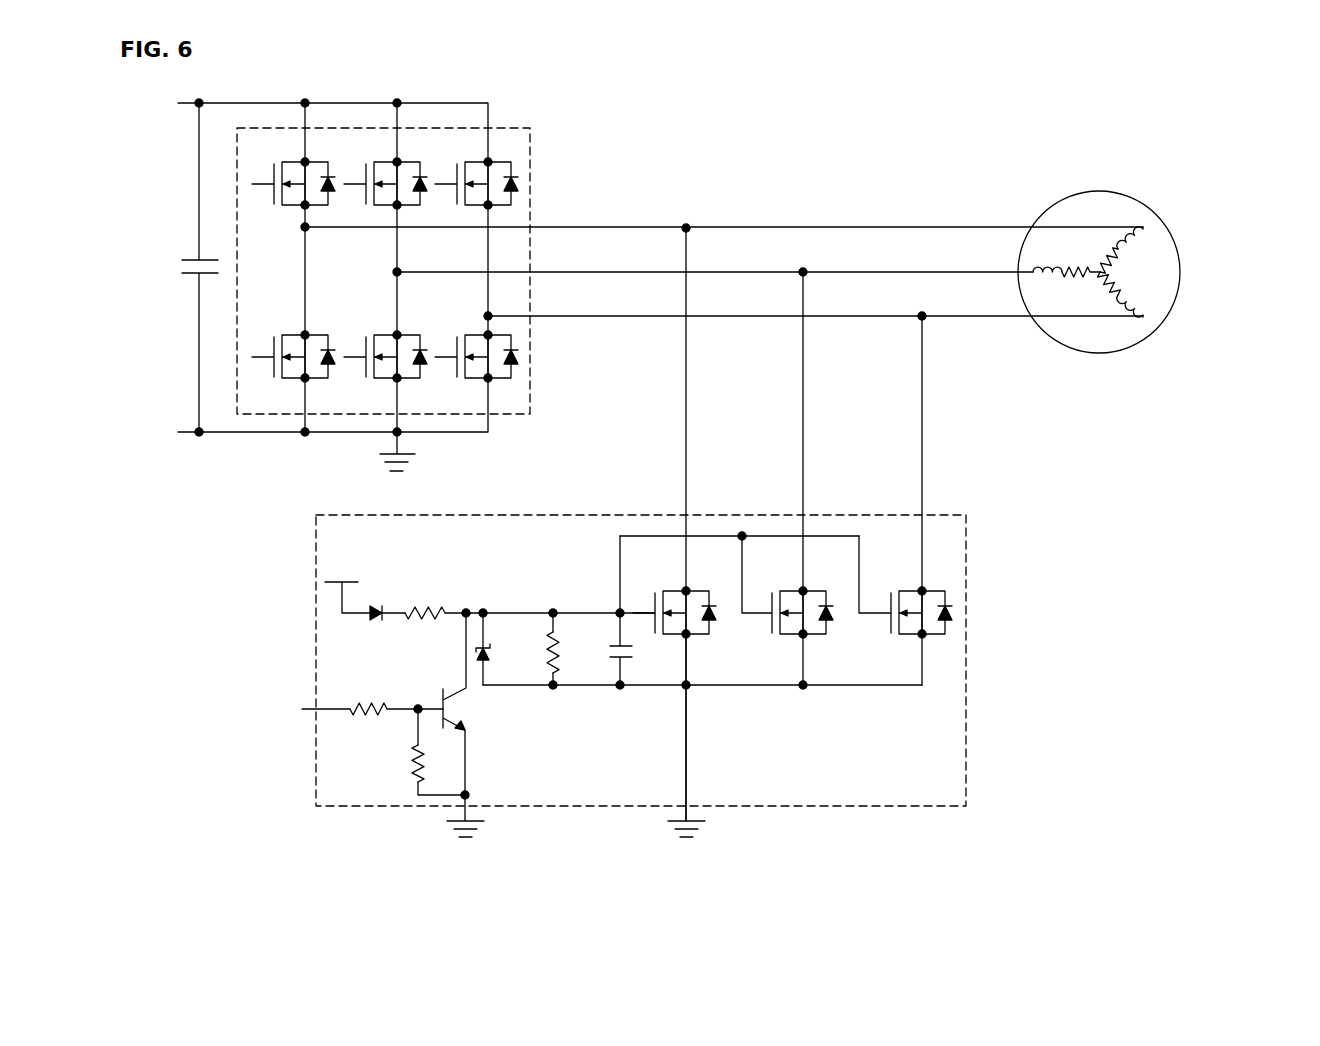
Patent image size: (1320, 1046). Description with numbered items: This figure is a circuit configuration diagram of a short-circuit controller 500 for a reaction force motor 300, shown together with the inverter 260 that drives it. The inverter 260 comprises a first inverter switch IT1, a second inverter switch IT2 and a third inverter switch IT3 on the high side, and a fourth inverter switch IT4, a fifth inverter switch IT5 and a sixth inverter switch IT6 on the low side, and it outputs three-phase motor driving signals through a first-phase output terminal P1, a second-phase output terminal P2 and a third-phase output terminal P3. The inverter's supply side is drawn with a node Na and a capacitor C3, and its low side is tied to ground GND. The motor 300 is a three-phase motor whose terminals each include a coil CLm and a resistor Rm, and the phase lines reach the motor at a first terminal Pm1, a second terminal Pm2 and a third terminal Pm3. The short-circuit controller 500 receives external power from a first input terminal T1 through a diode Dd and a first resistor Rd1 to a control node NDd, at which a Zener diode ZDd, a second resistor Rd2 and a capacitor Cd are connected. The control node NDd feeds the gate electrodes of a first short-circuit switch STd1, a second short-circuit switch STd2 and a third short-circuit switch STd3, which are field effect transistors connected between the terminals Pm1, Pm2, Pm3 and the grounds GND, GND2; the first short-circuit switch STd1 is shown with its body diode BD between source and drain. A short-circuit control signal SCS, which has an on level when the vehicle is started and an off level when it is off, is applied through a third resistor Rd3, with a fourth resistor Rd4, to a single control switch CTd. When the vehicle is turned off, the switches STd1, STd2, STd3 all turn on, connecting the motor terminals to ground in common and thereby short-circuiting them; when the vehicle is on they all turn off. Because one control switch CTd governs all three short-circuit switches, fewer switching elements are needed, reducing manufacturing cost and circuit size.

The inverter 260 is at (530, 152).
The node Na is at (199, 103).
The capacitor C3 is at (187, 348).
The first inverter switch IT1 is at (291, 170).
The second inverter switch IT2 is at (383, 170).
The third inverter switch IT3 is at (473, 170).
The fourth inverter switch IT4 is at (291, 372).
The fifth inverter switch IT5 is at (383, 372).
The sixth inverter switch IT6 is at (473, 372).
The first-phase output terminal P1 is at (305, 227).
The second-phase output terminal P2 is at (397, 272).
The third-phase output terminal P3 is at (488, 316).
The ground GND is at (397, 467).
The ground GND2 is at (575, 777).
The first terminal of the motor Pm1 is at (686, 228).
The second terminal of the motor Pm2 is at (803, 272).
The third terminal of the motor Pm3 is at (922, 316).
The reaction force motor 300 is at (1180, 272).
The coil CLm is at (1085, 272).
The resistor Rm is at (1091, 279).
The short-circuit controller 500 is at (577, 806).
The first input terminal T1 is at (347, 583).
The diode Dd is at (383, 631).
The first resistor Rd1 is at (529, 631).
The control node NDd is at (466, 613).
The Zener diode ZDd is at (508, 649).
The second resistor Rd2 is at (577, 649).
The capacitor Cd is at (634, 610).
The body diode BD is at (706, 659).
The first short-circuit switch STd1 is at (669, 599).
The second short-circuit switch STd2 is at (787, 587).
The third short-circuit switch STd3 is at (905, 587).
The short-circuit control signal SCS is at (299, 710).
The third resistor Rd3 is at (394, 691).
The fourth resistor Rd4 is at (413, 754).
The control switch CTd is at (482, 704).